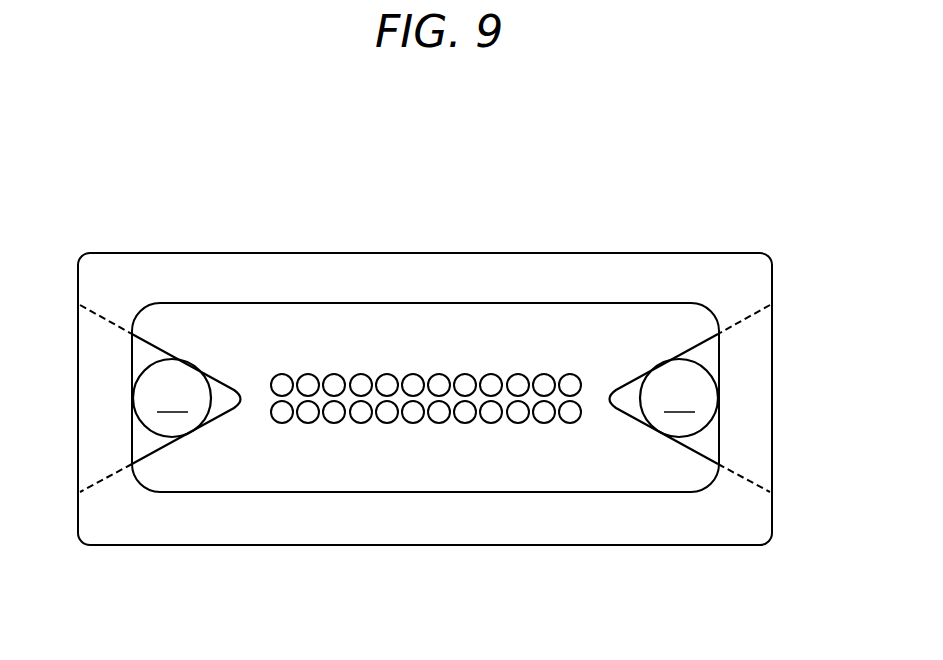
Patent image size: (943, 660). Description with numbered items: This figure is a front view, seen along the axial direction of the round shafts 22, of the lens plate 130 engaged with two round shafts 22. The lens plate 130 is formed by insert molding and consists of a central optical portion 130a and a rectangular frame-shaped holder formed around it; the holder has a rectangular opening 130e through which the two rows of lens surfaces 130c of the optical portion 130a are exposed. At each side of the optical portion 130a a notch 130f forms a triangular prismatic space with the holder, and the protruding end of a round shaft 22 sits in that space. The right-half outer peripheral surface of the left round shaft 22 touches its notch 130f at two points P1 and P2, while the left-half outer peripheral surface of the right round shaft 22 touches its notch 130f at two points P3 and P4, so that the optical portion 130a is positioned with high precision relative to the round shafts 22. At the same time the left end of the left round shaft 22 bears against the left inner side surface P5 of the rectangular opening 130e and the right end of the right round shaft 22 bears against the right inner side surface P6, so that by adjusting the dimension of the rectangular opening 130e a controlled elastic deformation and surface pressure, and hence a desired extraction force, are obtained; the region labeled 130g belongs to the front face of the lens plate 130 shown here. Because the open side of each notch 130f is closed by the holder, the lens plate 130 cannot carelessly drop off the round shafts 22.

The lens plate 130 is at (158, 251).
The optical portion 130a is at (485, 475).
The lens surfaces 130c is at (570, 380).
The rectangular opening 130e is at (578, 484).
The notch 130f is at (138, 446).
The housing front face 130g is at (452, 268).
The round shaft 22 is at (425, 398).
The contact point P1 is at (190, 364).
The contact point P2 is at (183, 432).
The contact point P3 is at (662, 362).
The contact point P4 is at (662, 432).
The left inner side surface P5 is at (134, 398).
The right inner side surface P6 is at (712, 400).